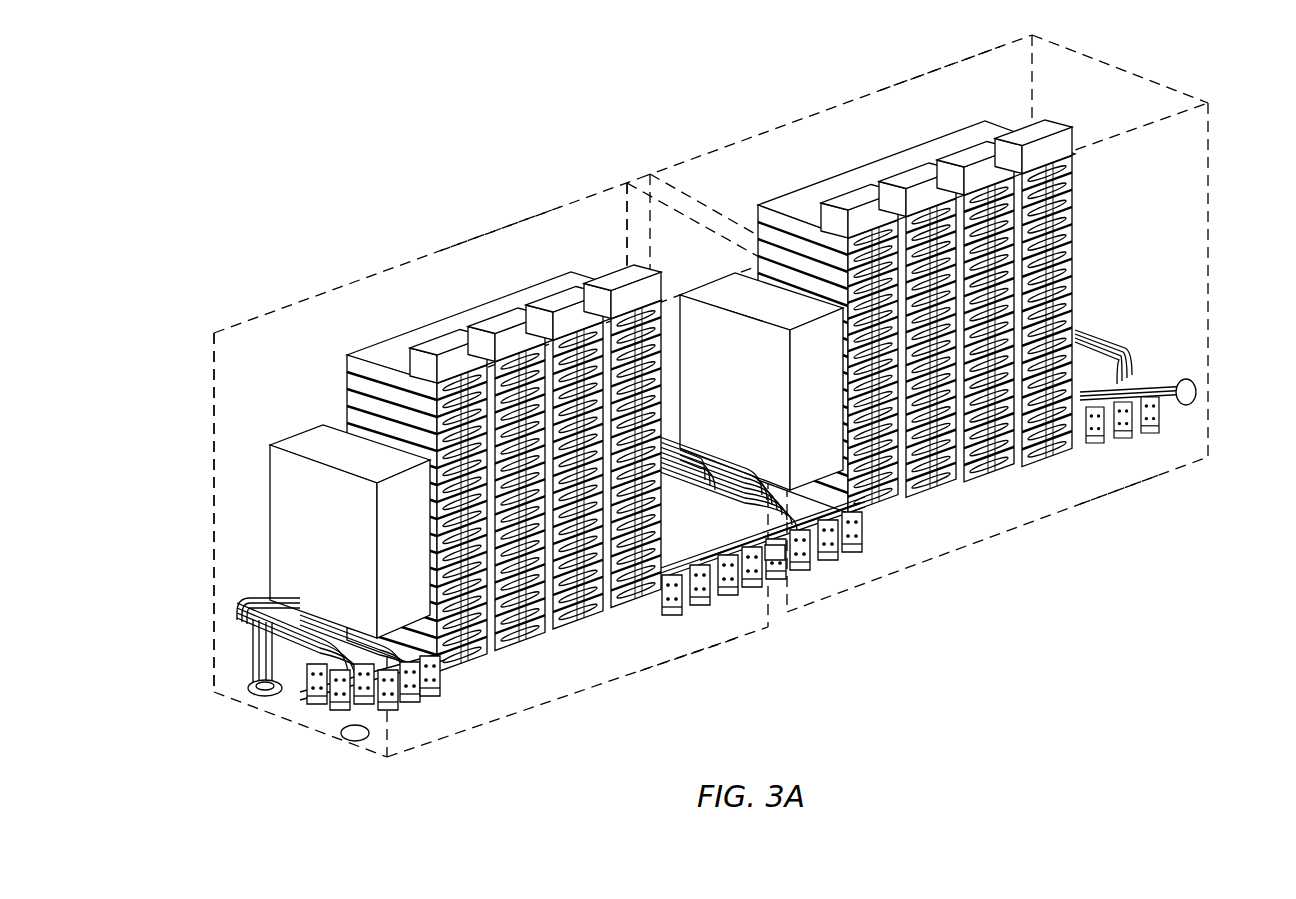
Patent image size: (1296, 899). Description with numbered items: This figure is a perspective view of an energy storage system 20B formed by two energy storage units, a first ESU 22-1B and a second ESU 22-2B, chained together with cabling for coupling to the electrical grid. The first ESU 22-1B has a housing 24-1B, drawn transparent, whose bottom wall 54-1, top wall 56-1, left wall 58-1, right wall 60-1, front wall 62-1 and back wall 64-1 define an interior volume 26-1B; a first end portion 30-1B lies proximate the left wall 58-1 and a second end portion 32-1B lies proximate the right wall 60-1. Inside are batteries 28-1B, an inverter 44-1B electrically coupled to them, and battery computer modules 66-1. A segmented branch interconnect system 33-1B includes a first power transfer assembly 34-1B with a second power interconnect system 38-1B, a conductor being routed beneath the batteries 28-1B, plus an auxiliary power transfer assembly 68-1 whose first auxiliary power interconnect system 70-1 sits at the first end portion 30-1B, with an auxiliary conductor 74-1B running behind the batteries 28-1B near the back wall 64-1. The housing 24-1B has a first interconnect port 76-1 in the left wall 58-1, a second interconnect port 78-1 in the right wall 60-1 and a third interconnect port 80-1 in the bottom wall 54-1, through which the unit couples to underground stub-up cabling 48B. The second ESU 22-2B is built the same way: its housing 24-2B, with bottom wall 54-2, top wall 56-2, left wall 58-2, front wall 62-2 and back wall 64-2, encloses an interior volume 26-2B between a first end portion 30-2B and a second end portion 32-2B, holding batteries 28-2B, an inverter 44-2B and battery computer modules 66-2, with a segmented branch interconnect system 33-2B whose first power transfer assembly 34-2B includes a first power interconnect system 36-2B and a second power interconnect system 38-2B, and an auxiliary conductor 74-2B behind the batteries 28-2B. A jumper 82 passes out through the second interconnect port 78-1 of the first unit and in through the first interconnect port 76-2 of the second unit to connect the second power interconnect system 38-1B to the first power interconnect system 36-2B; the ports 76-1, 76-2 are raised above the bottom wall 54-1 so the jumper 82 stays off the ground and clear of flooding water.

The energy storage system 20B is at (495, 117).
The first energy storage unit 22-1B is at (488, 464).
The second energy storage unit 22-2B is at (939, 302).
The housing 24-1B is at (274, 310).
The housing 24-2B is at (757, 135).
The interior volume 26-1B is at (245, 390).
The interior volume 26-2B is at (1194, 164).
The batteries 28-1B is at (585, 590).
The batteries 28-2B is at (1000, 437).
The first end portion 30-1B is at (216, 328).
The first end portion 30-2B is at (681, 148).
The second end portion 32-1B is at (627, 174).
The second end portion 32-2B is at (1028, 35).
The first segmented branch interconnect system 33-1B is at (414, 712).
The first segmented branch interconnect system 33-2B is at (854, 554).
The first power transfer assembly 34-1B is at (352, 710).
The first power transfer assembly 34-2B is at (828, 562).
The first power interconnect system 36-2B is at (803, 572).
The second power interconnect system 38-1B is at (724, 606).
The second power interconnect system 38-2B is at (1155, 432).
The inverter 44-1B is at (268, 522).
The inverter 44-2B is at (835, 440).
The underground cabling 48B is at (255, 655).
The bottom wall 54-1 is at (547, 705).
The bottom wall 54-2 is at (997, 547).
The top wall 56-1 is at (497, 237).
The top wall 56-2 is at (935, 78).
The left wall 58-1 is at (214, 455).
The left wall 58-2 is at (705, 215).
The right wall 60-1 is at (627, 225).
The front wall 62-1 is at (681, 641).
The front wall 62-2 is at (1100, 487).
The back wall 64-1 is at (352, 333).
The back wall 64-2 is at (808, 124).
The battery computer modules 66-1 is at (440, 350).
The battery computer modules 66-2 is at (855, 195).
The auxiliary power transfer assembly 68-1 is at (308, 700).
The first auxiliary power interconnect system 70-1 is at (328, 712).
The auxiliary conductor 74-1B is at (240, 612).
The auxiliary conductor 74-2B is at (1130, 345).
The first interconnect port 76-1 is at (362, 744).
The first interconnect port 76-2 is at (778, 568).
The second interconnect port 78-1 is at (760, 582).
The third interconnect port 80-1 is at (244, 688).
The jumper 82 is at (792, 558).